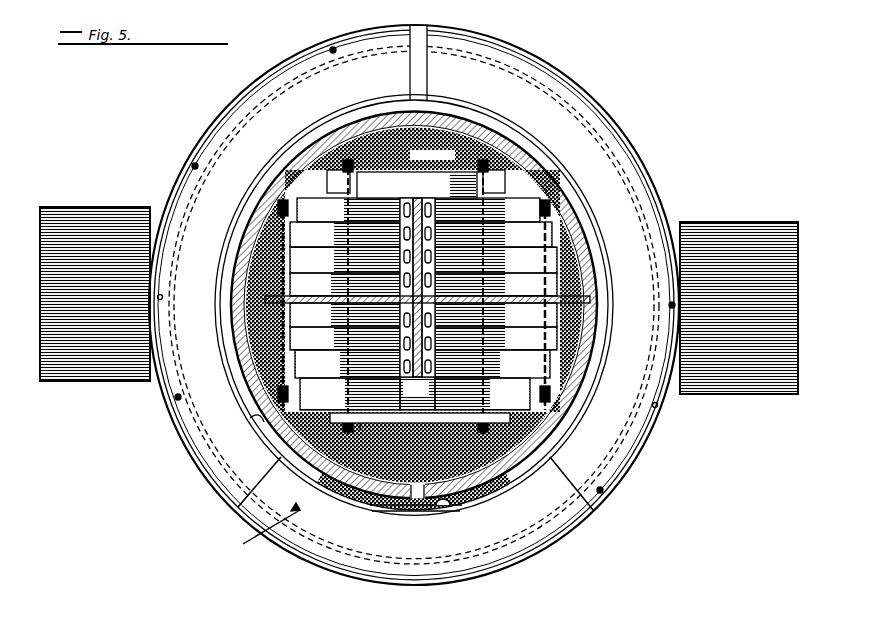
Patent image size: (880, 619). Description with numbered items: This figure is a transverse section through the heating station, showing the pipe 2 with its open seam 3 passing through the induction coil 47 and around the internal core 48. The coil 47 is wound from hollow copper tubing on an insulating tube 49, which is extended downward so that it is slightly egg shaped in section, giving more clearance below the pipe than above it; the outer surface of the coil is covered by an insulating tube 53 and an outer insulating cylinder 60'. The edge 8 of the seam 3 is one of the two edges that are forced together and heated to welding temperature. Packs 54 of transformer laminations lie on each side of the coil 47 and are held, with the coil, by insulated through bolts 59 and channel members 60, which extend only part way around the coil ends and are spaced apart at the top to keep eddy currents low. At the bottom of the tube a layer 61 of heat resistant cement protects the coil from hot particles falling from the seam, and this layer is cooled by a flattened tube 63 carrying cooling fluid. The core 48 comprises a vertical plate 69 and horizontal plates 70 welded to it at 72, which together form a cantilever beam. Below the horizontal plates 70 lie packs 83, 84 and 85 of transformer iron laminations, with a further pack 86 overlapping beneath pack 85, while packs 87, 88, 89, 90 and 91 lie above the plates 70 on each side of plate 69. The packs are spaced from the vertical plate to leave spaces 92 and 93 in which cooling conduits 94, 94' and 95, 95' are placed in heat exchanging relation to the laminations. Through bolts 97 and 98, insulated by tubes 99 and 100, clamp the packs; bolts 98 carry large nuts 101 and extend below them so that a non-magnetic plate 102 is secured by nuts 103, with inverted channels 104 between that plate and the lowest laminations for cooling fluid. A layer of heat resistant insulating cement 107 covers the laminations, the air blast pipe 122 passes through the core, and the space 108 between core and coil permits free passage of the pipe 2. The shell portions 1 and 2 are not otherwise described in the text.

The shell half 1 is at (390, 484).
The pipe 2 is at (497, 465).
The open seam 3 is at (410, 492).
The seam edge 8 is at (428, 490).
The induction coil 47 is at (234, 556).
The core 48 is at (578, 252).
The insulating tube 49 is at (275, 434).
The insulating tube 53 is at (318, 545).
The packs of transformer laminations 54 is at (97, 213).
The insulated through bolts 59 is at (331, 48).
The channel members 60 is at (415, 483).
The insulating tube 60' is at (352, 595).
The layer of heat resistant cement 61 is at (354, 496).
The flattened tube 63 is at (443, 512).
The vertical plate 69 is at (417, 198).
The horizontal plates 70 is at (362, 296).
The weld 72 is at (400, 299).
The pack of transformer iron laminations 83 is at (422, 364).
The pack of transformer iron laminations 84 is at (423, 338).
The pack of transformer iron laminations 85 is at (423, 315).
The pack of transformer iron laminations 86 is at (415, 394).
The pack of transformer iron laminations 87 is at (423, 284).
The pack of transformer iron laminations 88 is at (423, 260).
The pack of transformer iron laminations 89 is at (421, 234).
The pack of transformer iron laminations 90 is at (418, 210).
The pack of transformer iron laminations 91 is at (416, 181).
The space 92 is at (417, 393).
The space 93 is at (407, 198).
The conduit 94 is at (385, 338).
The conduit 94' is at (447, 338).
The conduit 95 is at (390, 287).
The conduit 95' is at (445, 287).
The through bolt 97 is at (560, 420).
The through bolt 98 is at (513, 134).
The insulating tube 99 is at (598, 352).
The insulating tube 100 is at (548, 165).
The nut 101 is at (330, 419).
The plate of non-magnetic material 102 is at (395, 425).
The nut 103 is at (352, 428).
The inverted channel members 104 is at (438, 426).
The heat resistant insulating cement 107 is at (430, 155).
The space 108 is at (242, 310).
The air blast pipe 122 is at (436, 307).